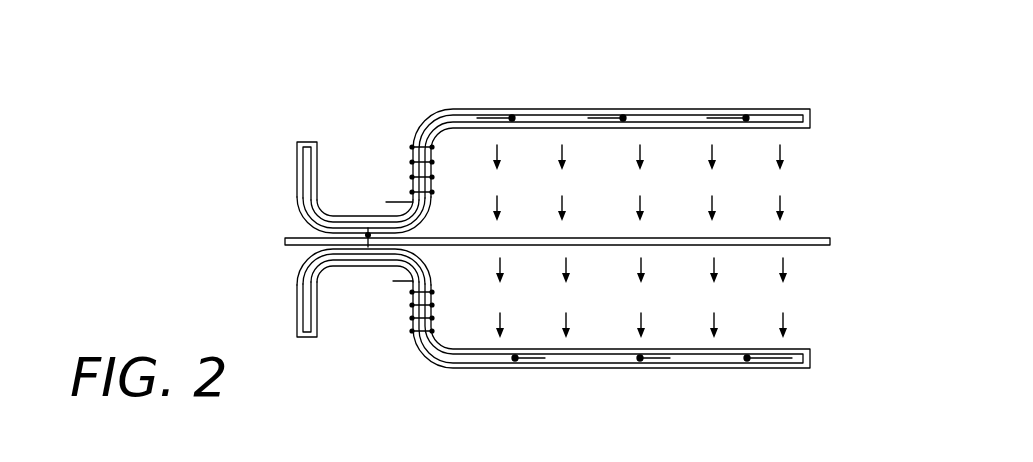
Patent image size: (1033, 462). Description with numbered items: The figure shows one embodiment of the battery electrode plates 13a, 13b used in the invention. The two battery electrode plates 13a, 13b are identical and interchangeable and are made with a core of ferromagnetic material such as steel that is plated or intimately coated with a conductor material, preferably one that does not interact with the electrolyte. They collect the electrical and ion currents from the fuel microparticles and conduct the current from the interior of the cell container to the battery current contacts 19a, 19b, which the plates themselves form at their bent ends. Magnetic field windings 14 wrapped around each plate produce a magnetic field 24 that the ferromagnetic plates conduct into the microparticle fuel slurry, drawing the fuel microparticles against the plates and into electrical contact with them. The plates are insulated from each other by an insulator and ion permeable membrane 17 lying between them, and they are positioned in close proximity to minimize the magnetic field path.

The battery electrode plate 13a is at (493, 363).
The battery electrode plate 13b is at (460, 110).
The magnetic field windings 14 is at (414, 147).
The insulator and ion permeable membrane 17 is at (826, 238).
The battery current contact 19a is at (297, 283).
The battery current contact 19b is at (297, 200).
The magnetic field 24 is at (603, 110).